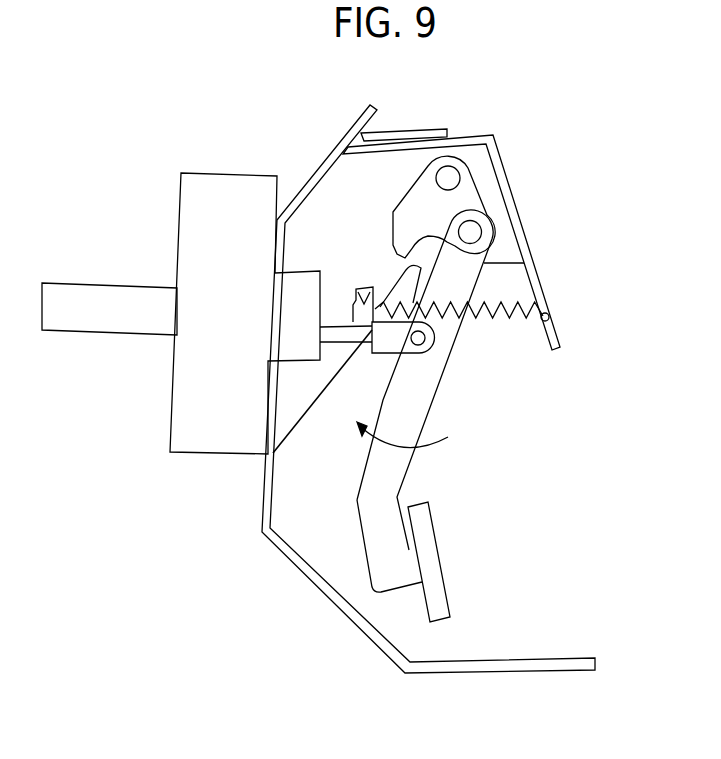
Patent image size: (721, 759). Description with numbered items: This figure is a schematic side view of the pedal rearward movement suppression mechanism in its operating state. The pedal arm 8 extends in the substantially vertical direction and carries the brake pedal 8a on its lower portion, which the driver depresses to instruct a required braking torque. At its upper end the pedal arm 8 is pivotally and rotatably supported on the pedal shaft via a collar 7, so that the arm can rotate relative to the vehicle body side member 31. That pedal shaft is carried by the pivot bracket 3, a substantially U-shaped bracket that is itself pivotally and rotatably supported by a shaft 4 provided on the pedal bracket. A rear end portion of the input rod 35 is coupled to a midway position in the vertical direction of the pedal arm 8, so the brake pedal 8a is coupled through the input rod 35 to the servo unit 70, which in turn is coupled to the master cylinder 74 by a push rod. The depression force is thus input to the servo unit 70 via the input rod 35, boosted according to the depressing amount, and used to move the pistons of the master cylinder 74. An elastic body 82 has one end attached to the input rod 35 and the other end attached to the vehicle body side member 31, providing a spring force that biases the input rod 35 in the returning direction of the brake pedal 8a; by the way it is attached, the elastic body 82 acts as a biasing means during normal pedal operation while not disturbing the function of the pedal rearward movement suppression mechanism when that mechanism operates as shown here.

The pivot bracket 3 is at (420, 204).
The shaft 4 is at (448, 178).
The collar 7 is at (472, 232).
The pedal arm 8 is at (390, 485).
The brake pedal 8a is at (442, 557).
The vehicle body side member 31 is at (527, 166).
The input rod 35 is at (337, 332).
The servo unit 70 is at (223, 442).
The master cylinder 74 is at (108, 312).
The elastic body 82 is at (510, 323).